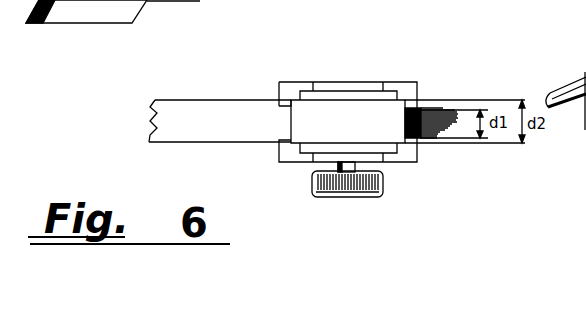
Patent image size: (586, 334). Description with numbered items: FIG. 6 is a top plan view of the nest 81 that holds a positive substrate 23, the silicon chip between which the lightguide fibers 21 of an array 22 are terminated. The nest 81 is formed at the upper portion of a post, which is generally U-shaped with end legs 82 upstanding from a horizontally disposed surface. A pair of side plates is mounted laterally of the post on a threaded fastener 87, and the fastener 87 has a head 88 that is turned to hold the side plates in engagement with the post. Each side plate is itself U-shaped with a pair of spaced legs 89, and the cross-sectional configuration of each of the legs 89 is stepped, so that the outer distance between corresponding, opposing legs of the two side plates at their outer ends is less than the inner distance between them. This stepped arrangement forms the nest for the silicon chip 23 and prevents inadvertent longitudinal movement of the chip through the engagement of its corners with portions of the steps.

The lightguide fibers 21 is at (435, 110).
The array 22 is at (194, 142).
The positive substrate 23 is at (291, 128).
The nest 81 is at (365, 68).
The end legs 82 is at (328, 87).
The threaded fastener 87 is at (357, 167).
The head 88 is at (382, 183).
The legs 89 is at (292, 86).